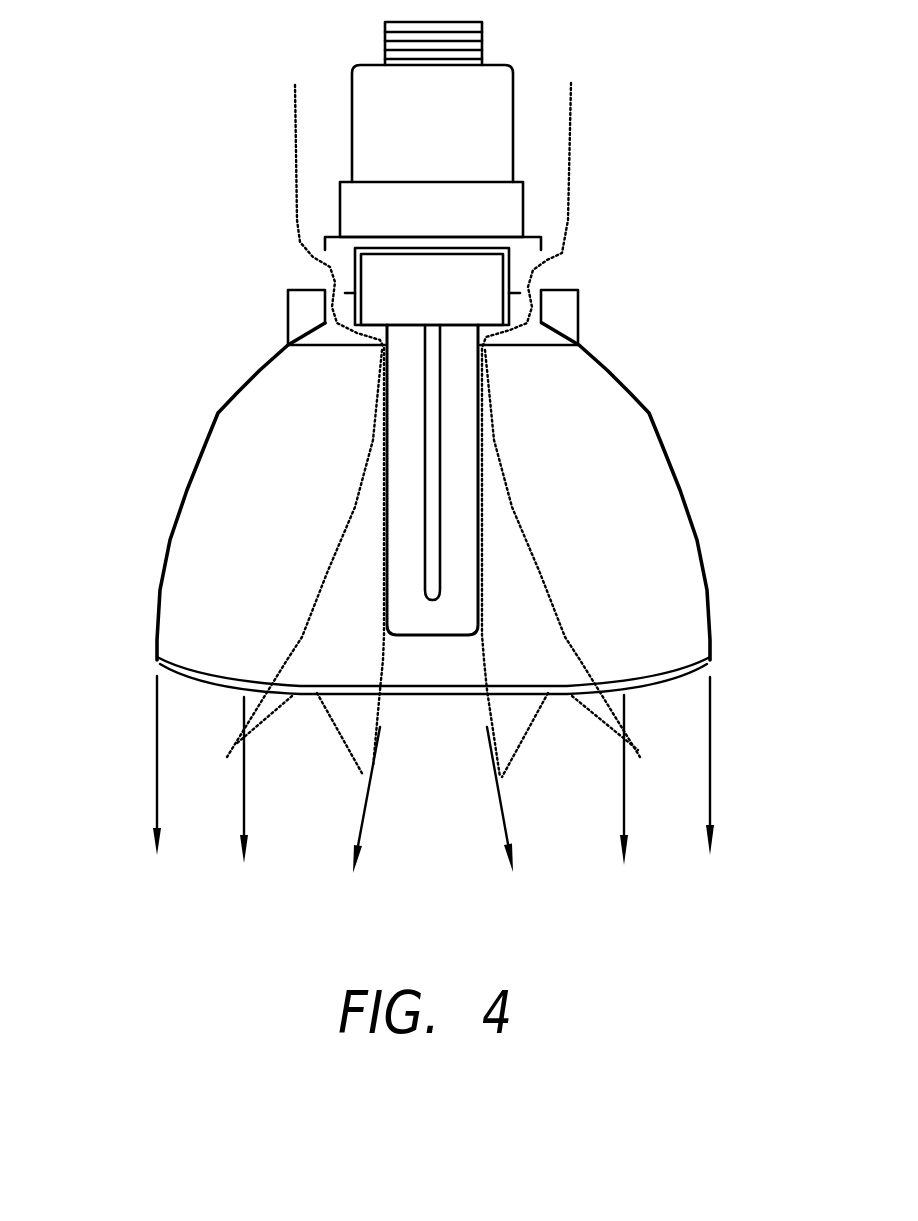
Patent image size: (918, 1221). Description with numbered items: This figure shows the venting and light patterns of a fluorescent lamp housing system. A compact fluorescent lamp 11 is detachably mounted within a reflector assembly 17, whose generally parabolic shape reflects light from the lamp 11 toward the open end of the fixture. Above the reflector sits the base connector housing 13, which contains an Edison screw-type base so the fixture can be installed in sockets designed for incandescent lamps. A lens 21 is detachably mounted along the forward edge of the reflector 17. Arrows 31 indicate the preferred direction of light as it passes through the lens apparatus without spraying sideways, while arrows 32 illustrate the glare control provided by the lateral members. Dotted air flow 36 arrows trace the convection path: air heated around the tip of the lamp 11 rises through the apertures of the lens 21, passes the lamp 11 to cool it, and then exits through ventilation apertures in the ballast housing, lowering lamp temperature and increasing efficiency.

The lamp 11 is at (463, 458).
The base connector housing 13 is at (377, 98).
The reflector assembly 17 is at (220, 412).
The lens 21 is at (270, 662).
The arrows 31 is at (240, 817).
The arrows 32 is at (362, 833).
The air flow 36 is at (588, 123).